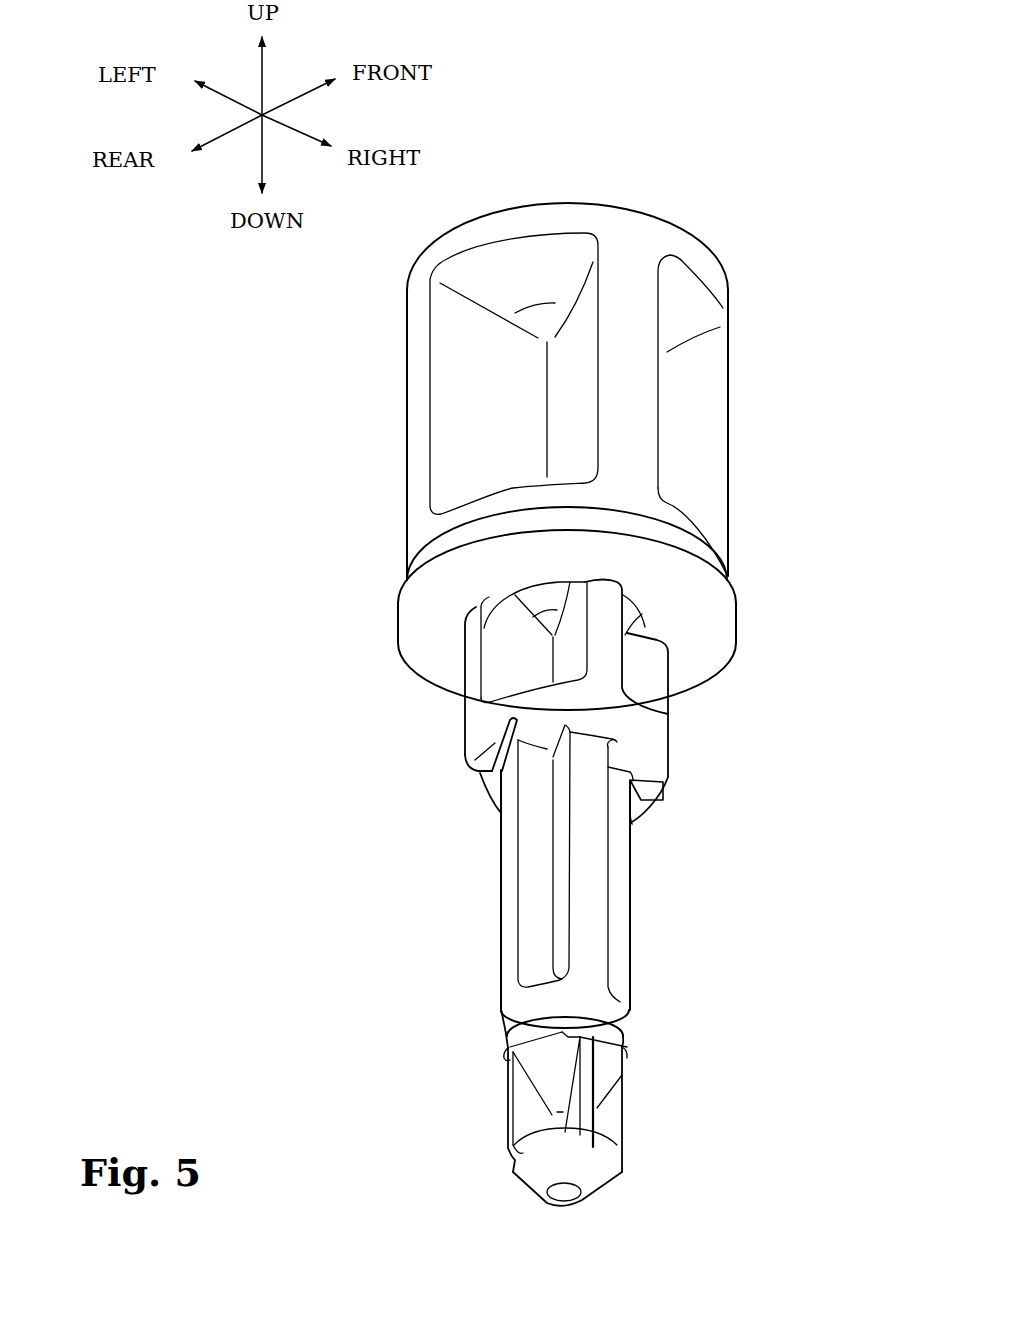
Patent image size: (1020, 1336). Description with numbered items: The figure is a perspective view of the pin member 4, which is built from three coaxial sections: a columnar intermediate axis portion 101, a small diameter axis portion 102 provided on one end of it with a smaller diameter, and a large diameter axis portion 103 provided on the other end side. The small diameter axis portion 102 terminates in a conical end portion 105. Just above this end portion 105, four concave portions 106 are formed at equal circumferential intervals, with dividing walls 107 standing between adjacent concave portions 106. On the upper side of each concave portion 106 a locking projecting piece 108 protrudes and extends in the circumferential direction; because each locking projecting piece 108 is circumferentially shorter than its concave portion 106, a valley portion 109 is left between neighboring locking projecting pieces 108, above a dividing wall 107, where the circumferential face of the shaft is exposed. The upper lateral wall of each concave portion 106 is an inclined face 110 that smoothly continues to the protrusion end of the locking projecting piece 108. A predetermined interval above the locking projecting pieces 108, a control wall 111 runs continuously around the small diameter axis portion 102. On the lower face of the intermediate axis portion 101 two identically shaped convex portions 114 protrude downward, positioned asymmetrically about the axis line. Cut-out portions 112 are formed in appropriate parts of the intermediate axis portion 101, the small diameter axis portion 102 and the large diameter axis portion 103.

The pin member 4 is at (701, 209).
The large diameter axis portion 103 is at (399, 404).
The cut-out portions 112 is at (452, 450).
The intermediate axis portion 101 is at (461, 694).
The convex portions 114 is at (480, 768).
The small diameter axis portion 102 is at (497, 931).
The valley portion 109 is at (590, 1032).
The control wall 111 is at (507, 1025).
The locking projecting piece 108 is at (508, 1047).
The inclined face 110 is at (540, 1078).
The concave portions 106 is at (557, 1122).
The dividing walls 107 is at (588, 1075).
The end portion 105 is at (593, 1180).